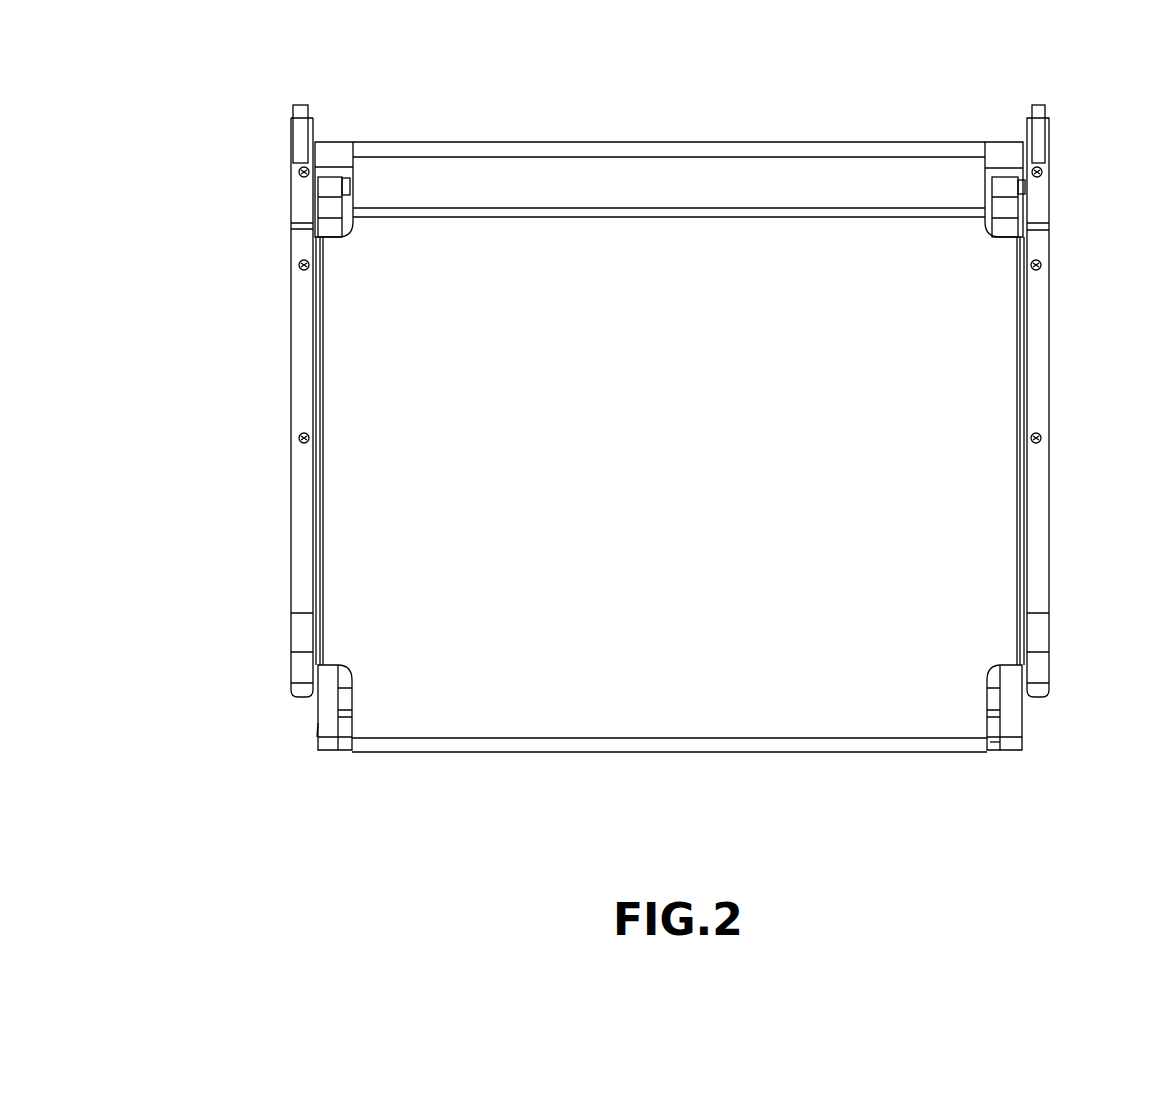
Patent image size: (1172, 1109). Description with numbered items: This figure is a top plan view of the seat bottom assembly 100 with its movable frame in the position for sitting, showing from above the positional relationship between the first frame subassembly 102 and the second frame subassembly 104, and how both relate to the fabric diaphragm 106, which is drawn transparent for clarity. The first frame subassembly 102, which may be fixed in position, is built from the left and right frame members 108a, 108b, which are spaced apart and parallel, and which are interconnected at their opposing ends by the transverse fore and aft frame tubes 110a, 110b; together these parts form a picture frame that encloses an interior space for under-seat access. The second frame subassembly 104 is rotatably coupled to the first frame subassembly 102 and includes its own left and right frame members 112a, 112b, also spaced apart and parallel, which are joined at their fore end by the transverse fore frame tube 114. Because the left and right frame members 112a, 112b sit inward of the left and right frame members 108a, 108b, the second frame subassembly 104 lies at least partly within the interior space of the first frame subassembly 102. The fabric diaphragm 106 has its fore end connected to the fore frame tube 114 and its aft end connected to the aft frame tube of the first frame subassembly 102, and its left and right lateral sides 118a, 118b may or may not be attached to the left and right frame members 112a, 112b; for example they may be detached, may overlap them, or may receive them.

The seat bottom assembly 100 is at (243, 49).
The first frame subassembly 102 is at (1069, 329).
The second frame subassembly 104 is at (497, 762).
The fabric diaphragm 106 is at (670, 720).
The left frame member 108a is at (1040, 518).
The right frame member 108b is at (302, 525).
The fore frame tube 110a is at (1000, 678).
The aft frame tube 110b is at (334, 146).
The left frame member 112a is at (1010, 715).
The right frame member 112b is at (330, 750).
The fore frame tube 114 is at (993, 745).
The left lateral side 118a is at (992, 445).
The right lateral side 118b is at (339, 384).